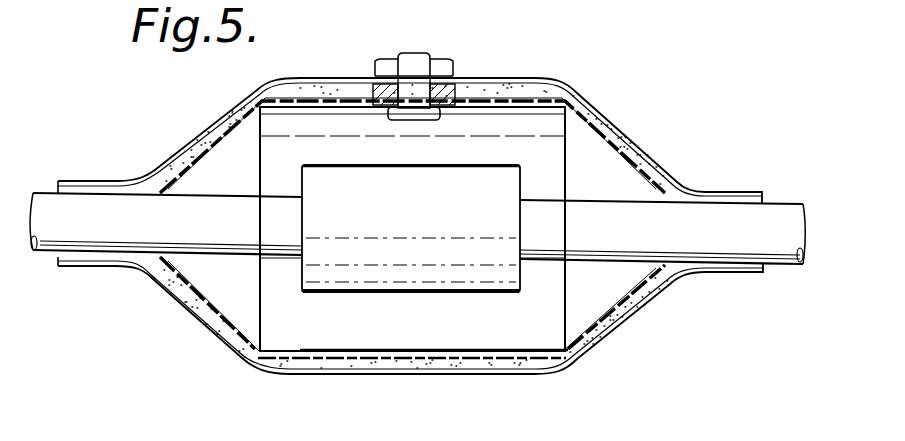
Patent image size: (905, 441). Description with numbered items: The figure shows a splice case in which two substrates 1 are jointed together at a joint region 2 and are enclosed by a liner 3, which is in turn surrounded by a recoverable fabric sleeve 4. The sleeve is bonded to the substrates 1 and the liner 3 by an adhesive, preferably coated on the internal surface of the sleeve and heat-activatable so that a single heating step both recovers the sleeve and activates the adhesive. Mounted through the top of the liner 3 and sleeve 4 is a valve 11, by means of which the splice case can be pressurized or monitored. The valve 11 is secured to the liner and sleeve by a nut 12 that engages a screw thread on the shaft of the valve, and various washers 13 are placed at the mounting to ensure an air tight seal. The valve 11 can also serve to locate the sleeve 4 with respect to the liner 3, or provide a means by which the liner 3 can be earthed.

The substrate 1 is at (710, 232).
The joint region 2 is at (495, 202).
The liner 3 is at (207, 305).
The recoverable fabric sleeve 4 is at (350, 375).
The valve 11 is at (398, 66).
The nut 12 is at (453, 61).
The washers 13 is at (456, 81).